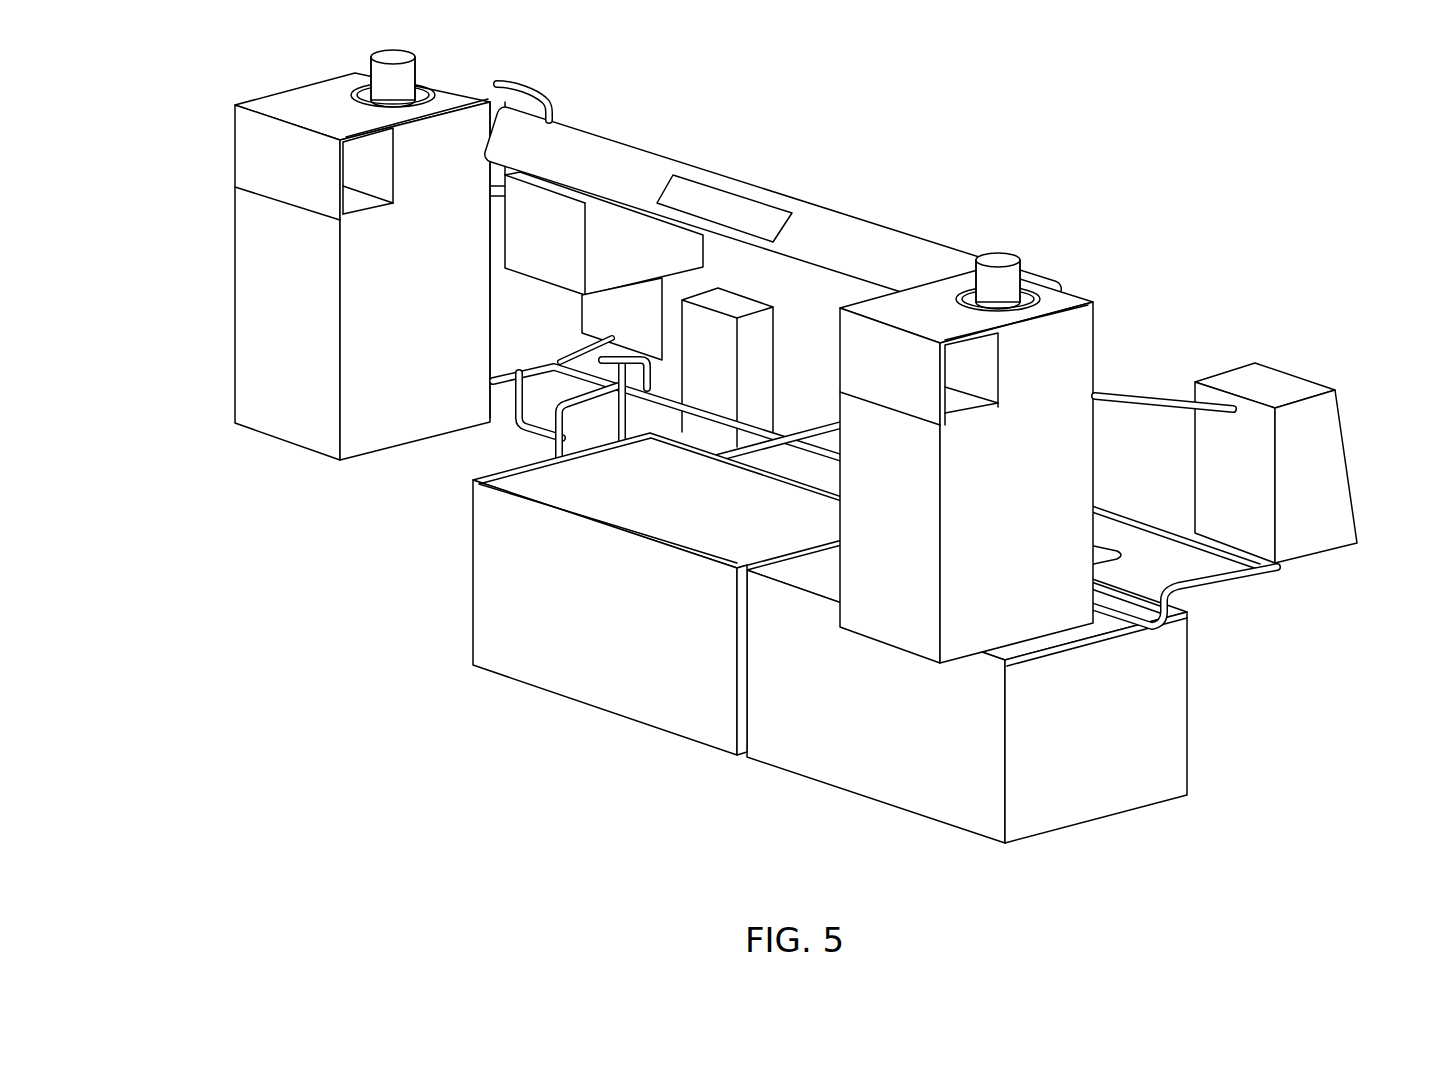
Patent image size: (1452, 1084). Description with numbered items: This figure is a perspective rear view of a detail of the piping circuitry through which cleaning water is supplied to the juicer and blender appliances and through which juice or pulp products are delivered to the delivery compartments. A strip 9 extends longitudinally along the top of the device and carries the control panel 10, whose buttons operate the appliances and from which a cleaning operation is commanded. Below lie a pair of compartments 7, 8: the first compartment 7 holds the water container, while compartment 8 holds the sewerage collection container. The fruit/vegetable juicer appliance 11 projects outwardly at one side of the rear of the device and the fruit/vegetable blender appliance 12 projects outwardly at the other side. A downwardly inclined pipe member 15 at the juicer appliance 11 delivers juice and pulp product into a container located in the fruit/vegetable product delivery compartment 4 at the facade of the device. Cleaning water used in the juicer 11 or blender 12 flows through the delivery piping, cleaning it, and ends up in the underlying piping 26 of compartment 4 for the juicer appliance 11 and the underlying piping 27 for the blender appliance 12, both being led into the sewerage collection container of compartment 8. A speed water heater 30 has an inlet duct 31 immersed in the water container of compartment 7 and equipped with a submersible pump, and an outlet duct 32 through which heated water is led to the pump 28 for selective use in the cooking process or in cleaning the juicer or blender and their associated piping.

The fruit/vegetable product delivery compartment 4 is at (1347, 467).
The first compartment 7 is at (674, 608).
The compartment 8 is at (860, 777).
The strip 9 is at (773, 211).
The control panel 10 is at (735, 206).
The fruit/vegetable juicer appliance 11 is at (935, 628).
The fruit/vegetable blender appliance 12 is at (235, 382).
The downwardly inclined pipe member 15 is at (1118, 392).
The underlying piping 26 is at (1190, 585).
The underlying piping 27 is at (522, 427).
The pump 28 is at (613, 370).
The speed water heater 30 is at (777, 333).
The inlet duct 31 is at (740, 515).
The outlet duct 32 is at (633, 483).